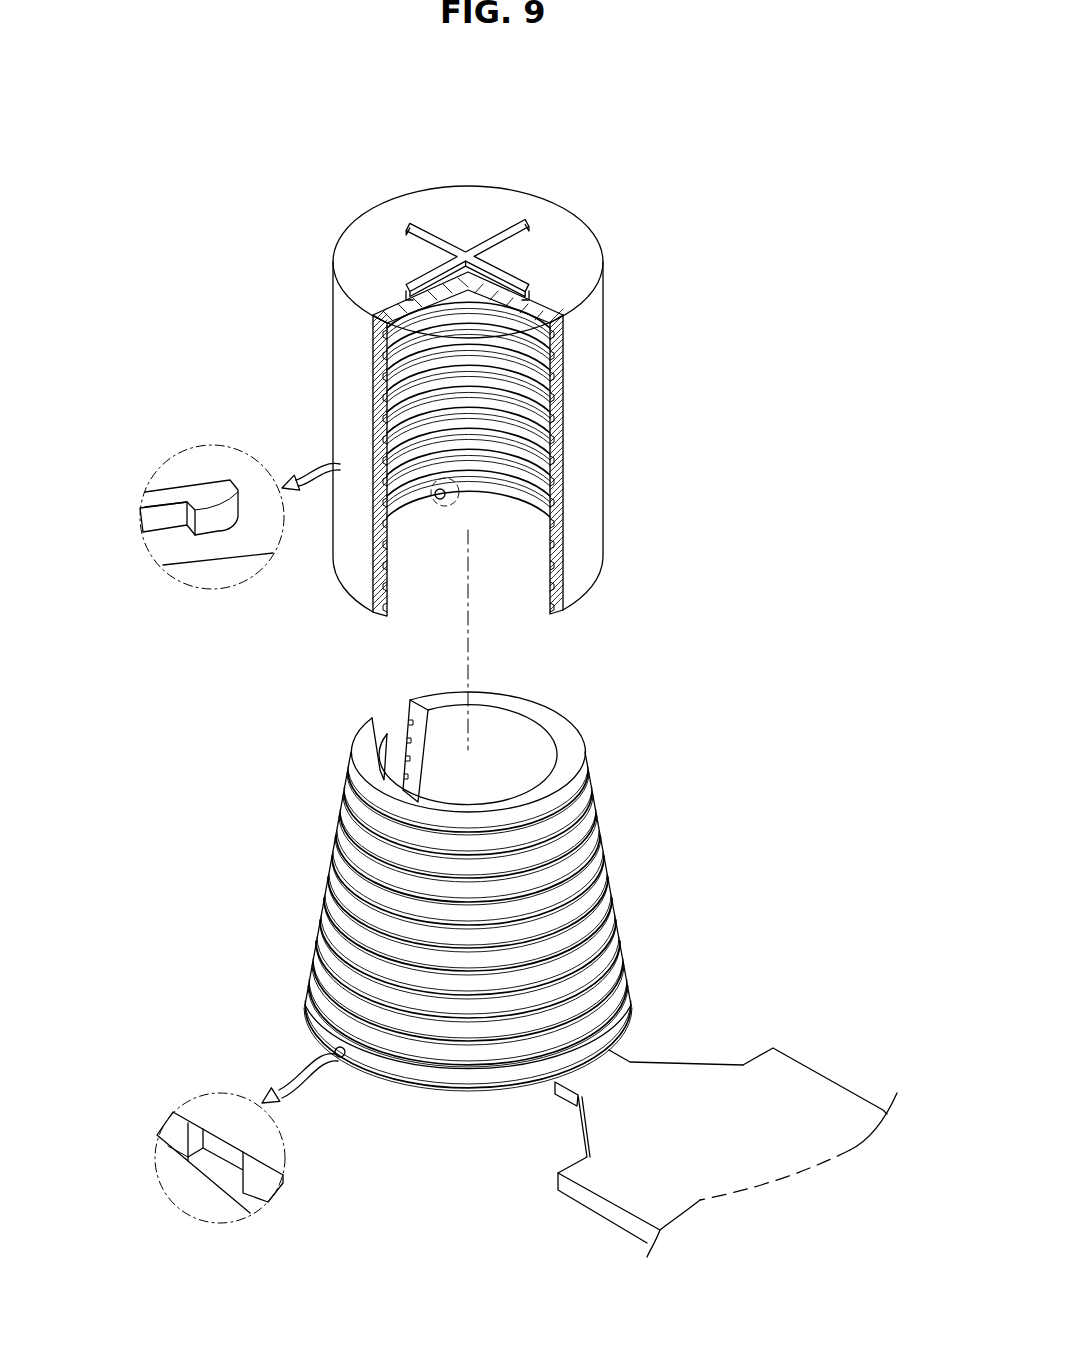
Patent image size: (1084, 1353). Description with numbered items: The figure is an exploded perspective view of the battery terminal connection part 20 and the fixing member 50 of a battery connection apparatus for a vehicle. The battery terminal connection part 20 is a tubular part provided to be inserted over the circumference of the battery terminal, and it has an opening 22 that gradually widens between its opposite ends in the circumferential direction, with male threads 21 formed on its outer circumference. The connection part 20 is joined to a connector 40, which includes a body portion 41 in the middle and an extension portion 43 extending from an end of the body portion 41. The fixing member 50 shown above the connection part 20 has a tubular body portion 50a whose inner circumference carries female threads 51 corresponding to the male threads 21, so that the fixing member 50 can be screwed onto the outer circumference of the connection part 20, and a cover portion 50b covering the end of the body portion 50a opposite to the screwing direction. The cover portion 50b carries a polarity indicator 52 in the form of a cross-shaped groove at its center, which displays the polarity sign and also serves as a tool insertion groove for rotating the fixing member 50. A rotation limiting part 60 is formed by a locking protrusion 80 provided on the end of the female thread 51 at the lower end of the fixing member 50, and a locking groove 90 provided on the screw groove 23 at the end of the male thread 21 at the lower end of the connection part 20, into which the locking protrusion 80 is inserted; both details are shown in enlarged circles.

The battery terminal connection part 20 is at (432, 884).
The male threads 21 is at (352, 872).
The opening 22 is at (378, 725).
The screw groove 23 is at (168, 1148).
The connector 40 is at (738, 1112).
The body portion 41 is at (842, 1102).
The extension portion 43 is at (625, 1053).
The fixing member 50 is at (409, 364).
The body portion 50a is at (603, 465).
The cover portion 50b is at (483, 197).
The female threads 51 is at (405, 371).
The polarity indicator 52 is at (428, 232).
The rotation limiting part 60 is at (212, 858).
The locking protrusion 80 is at (218, 522).
The locking groove 90 is at (211, 1163).